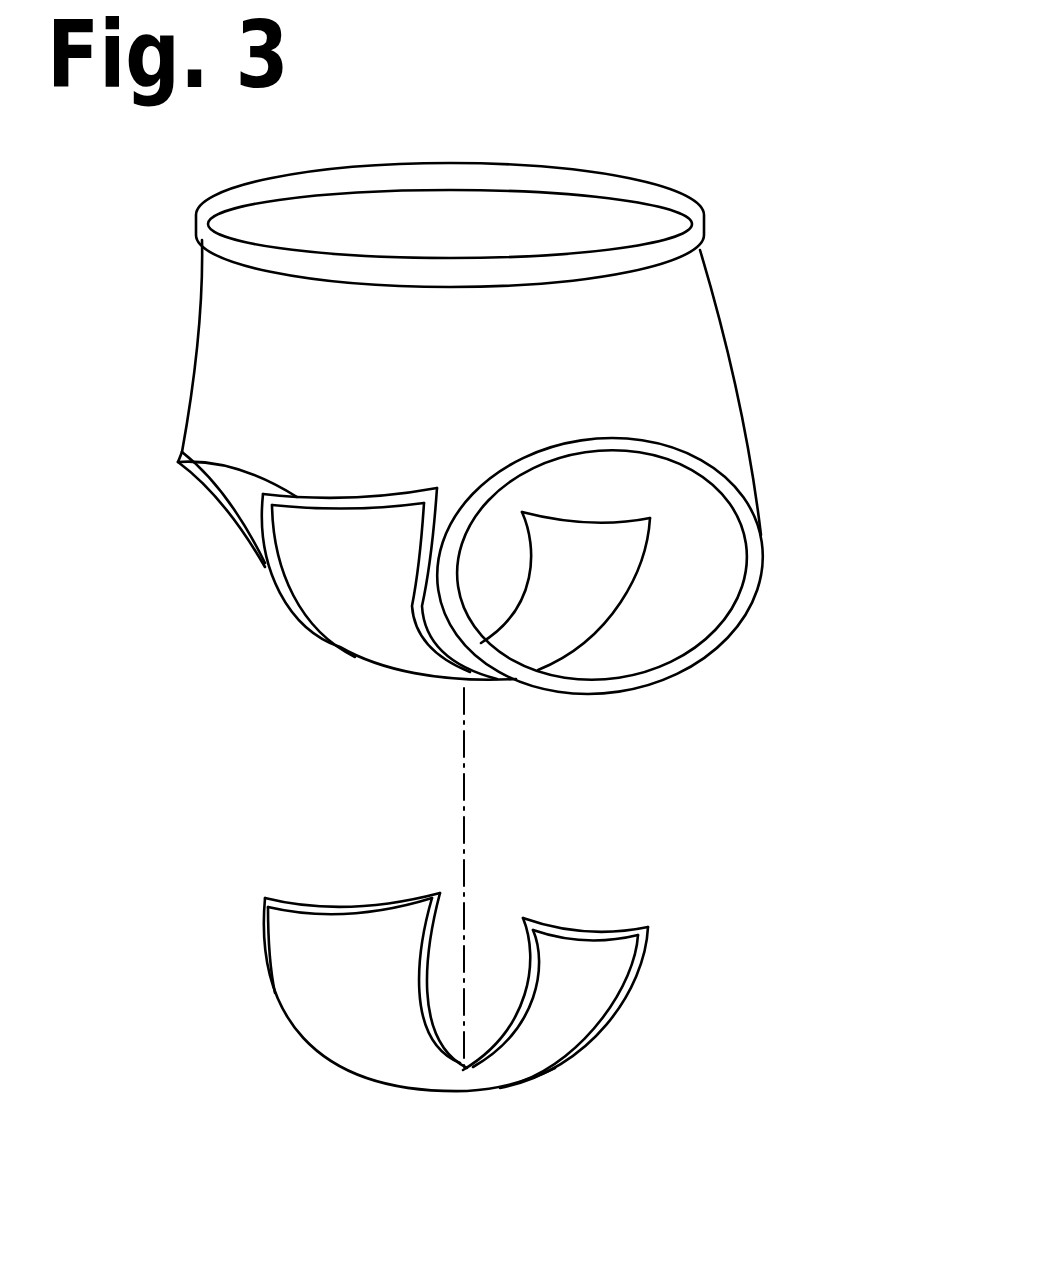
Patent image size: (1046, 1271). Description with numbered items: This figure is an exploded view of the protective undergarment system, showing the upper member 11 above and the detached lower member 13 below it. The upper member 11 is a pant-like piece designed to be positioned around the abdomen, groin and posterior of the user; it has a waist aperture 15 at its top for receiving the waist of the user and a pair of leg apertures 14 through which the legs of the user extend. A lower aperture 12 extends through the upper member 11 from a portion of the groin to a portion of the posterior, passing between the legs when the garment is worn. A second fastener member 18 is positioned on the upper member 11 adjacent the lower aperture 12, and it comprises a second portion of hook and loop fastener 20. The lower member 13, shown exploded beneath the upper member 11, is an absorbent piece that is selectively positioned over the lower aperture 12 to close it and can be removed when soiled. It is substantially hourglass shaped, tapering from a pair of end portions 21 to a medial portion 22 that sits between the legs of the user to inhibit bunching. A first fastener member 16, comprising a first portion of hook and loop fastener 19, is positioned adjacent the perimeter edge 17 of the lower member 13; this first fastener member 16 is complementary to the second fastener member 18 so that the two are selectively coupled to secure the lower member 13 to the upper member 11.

The upper member 11 is at (722, 340).
The lower aperture 12 is at (378, 638).
The lower member 13 is at (258, 892).
The leg apertures 14 is at (677, 606).
The waist aperture 15 is at (583, 233).
The first fastener member 16 is at (650, 923).
The perimeter edge 17 is at (617, 1008).
The second fastener member 18 is at (178, 462).
The first portion of hook and loop fastener 19 is at (643, 947).
The second portion of hook and loop fastener 20 is at (355, 497).
The end portions 21 is at (347, 902).
The medial portion 22 is at (518, 1057).